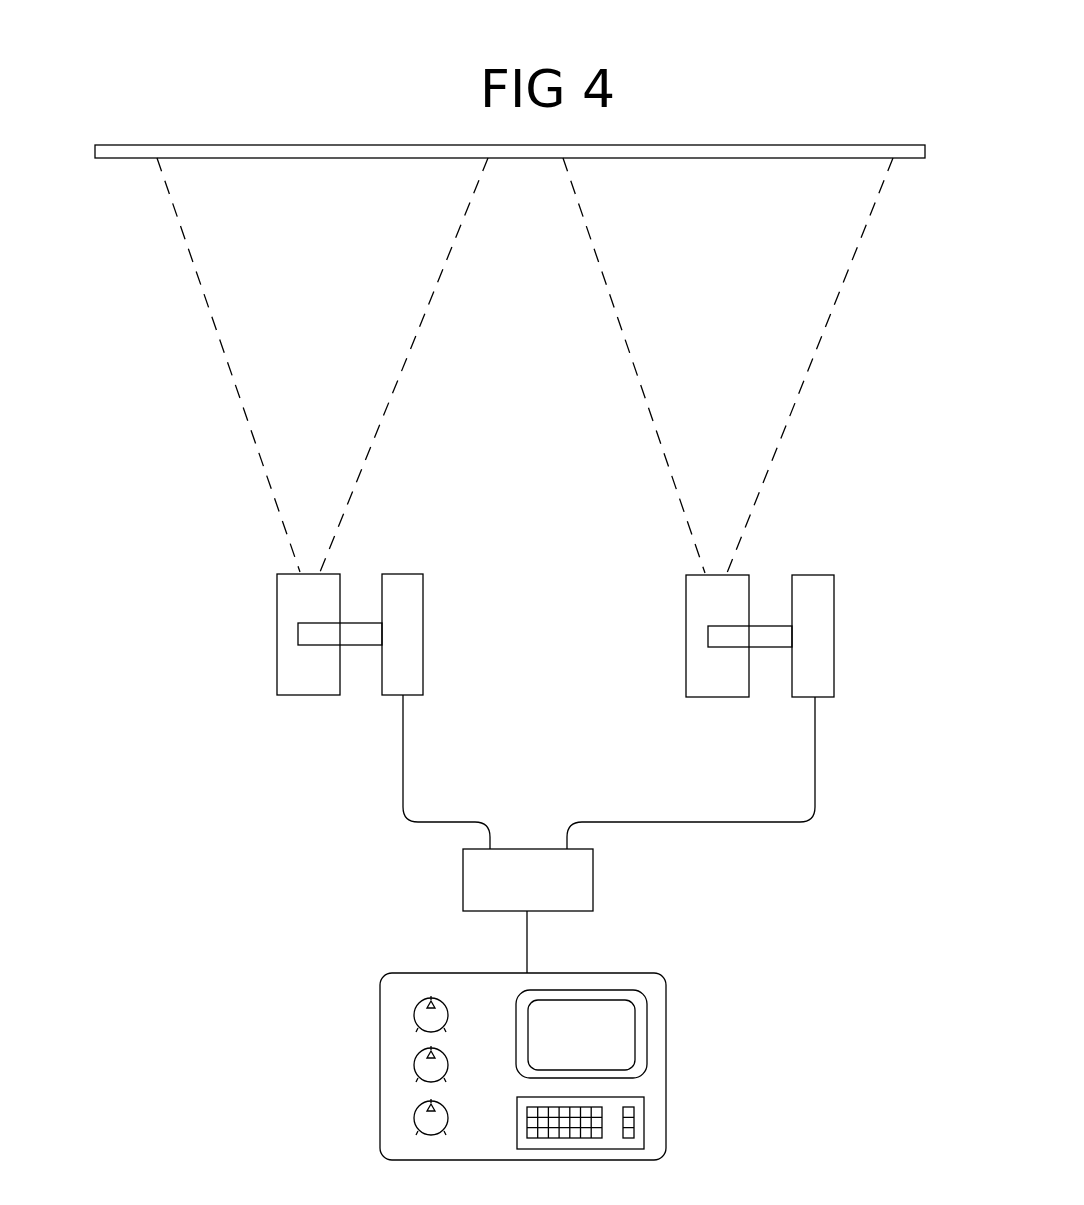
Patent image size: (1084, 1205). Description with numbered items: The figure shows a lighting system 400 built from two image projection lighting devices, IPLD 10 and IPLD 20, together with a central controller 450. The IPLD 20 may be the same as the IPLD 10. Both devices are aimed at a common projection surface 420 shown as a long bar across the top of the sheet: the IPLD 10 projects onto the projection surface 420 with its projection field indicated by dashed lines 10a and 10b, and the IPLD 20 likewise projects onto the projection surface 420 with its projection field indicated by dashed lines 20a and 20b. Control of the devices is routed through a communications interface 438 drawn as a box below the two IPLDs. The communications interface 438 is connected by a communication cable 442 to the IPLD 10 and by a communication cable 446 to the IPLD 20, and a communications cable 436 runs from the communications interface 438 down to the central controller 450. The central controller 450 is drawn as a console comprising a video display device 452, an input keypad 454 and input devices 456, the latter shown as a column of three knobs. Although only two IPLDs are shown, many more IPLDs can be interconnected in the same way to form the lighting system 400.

The lighting system 400 is at (133, 382).
The projection surface 420 is at (358, 168).
The IPLD 10 is at (257, 665).
The dashed line 10a is at (265, 508).
The dashed line 10b is at (349, 508).
The IPLD 20 is at (845, 670).
The dashed line 20a is at (672, 511).
The dashed line 20b is at (757, 511).
The communication cable 442 is at (398, 753).
The communication cable 446 is at (660, 828).
The communications interface 438 is at (463, 889).
The communications cable 436 is at (533, 950).
The central controller 450 is at (380, 1068).
The video display device 452 is at (645, 1032).
The input keypad 454 is at (647, 1123).
The input devices 456 is at (457, 1032).